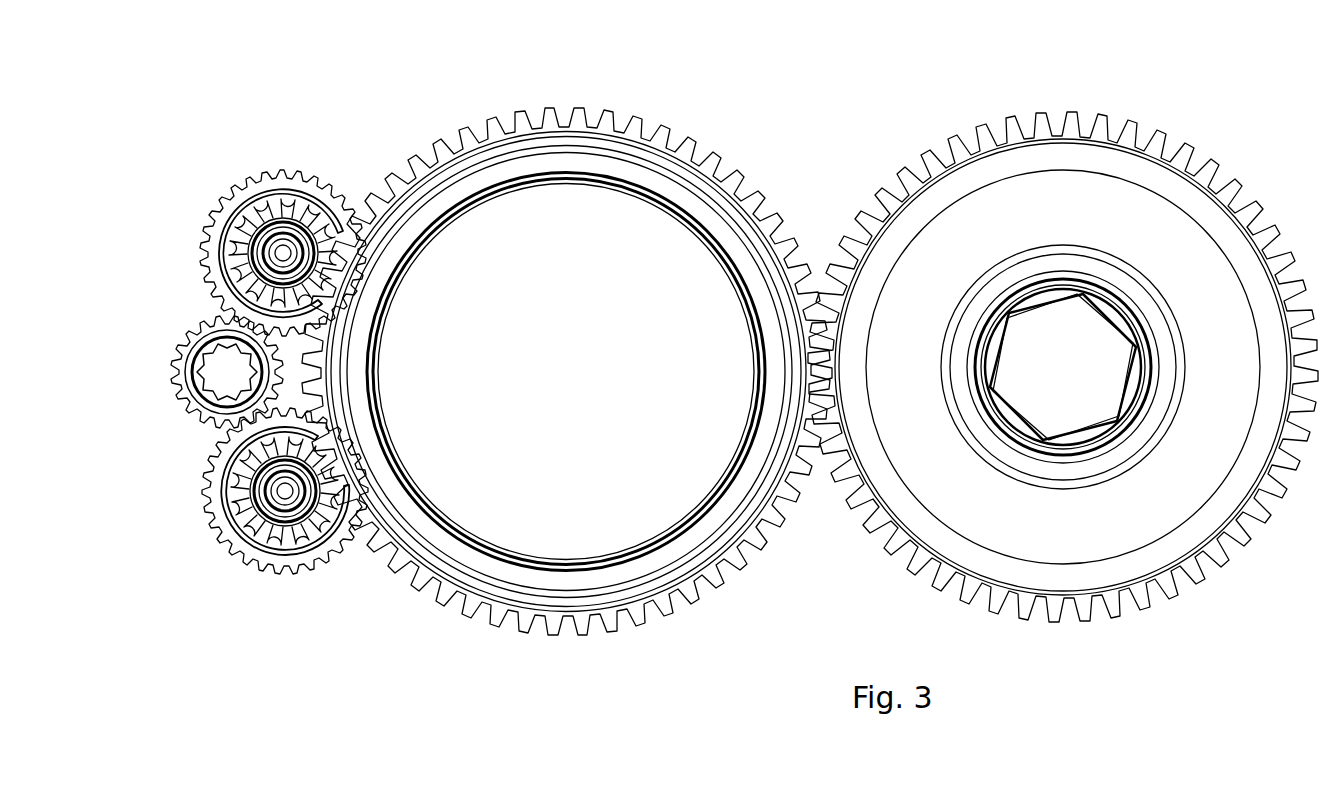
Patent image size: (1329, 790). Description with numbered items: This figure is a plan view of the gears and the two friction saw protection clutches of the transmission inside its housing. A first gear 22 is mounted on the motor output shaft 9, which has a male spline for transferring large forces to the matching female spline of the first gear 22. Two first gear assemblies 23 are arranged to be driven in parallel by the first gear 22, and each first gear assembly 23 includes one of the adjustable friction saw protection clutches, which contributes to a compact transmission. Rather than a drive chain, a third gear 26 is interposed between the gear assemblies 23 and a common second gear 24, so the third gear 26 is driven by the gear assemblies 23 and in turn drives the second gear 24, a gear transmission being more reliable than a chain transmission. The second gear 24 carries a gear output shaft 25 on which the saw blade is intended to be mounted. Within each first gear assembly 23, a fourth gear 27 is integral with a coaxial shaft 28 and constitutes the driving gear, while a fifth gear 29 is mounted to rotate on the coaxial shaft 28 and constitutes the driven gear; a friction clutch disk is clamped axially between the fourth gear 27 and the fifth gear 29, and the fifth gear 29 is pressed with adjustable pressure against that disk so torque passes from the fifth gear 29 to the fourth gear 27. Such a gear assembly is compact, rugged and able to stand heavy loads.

The motor output shaft 9 is at (220, 372).
The first gear 22 is at (200, 354).
The first gear assembly 23 is at (254, 384).
The second gear 24 is at (1063, 364).
The gear output shaft 25 is at (1088, 405).
The third gear 26 is at (640, 128).
The fourth gear 27 is at (288, 200).
The coaxial shaft 28 is at (302, 225).
The fifth gear 29 is at (212, 266).